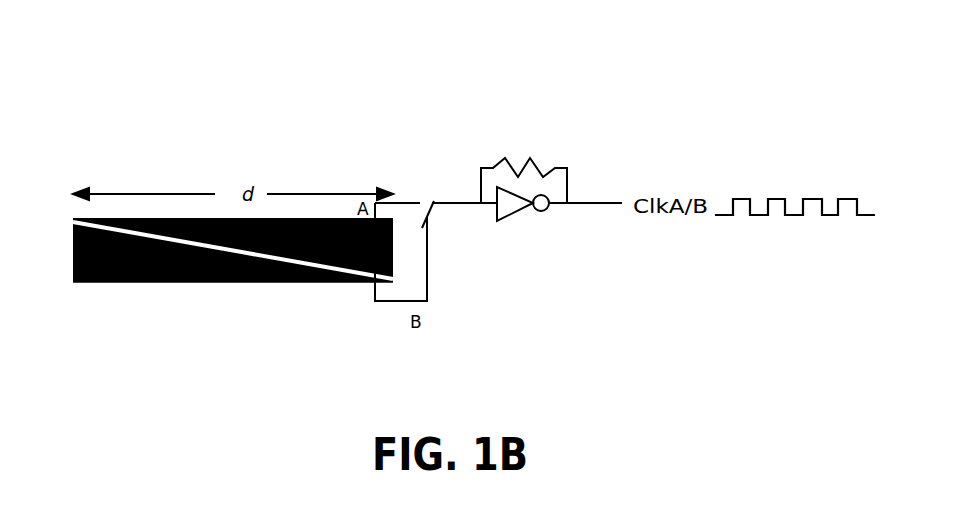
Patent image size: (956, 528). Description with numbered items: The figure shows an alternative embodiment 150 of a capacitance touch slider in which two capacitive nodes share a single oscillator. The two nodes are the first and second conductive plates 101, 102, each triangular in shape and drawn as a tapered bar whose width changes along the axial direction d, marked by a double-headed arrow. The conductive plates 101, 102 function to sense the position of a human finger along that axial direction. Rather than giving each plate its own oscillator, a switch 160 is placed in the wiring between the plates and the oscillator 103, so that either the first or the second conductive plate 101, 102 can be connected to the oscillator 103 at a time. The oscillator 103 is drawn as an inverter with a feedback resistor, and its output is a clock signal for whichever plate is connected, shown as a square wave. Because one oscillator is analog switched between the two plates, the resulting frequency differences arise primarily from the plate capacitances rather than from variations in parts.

The first conductive plate 101 is at (281, 218).
The second conductive plate 102 is at (186, 281).
The oscillator 103 is at (510, 221).
The capacitance touch slider embodiment 150 is at (470, 105).
The switch 160 is at (431, 202).